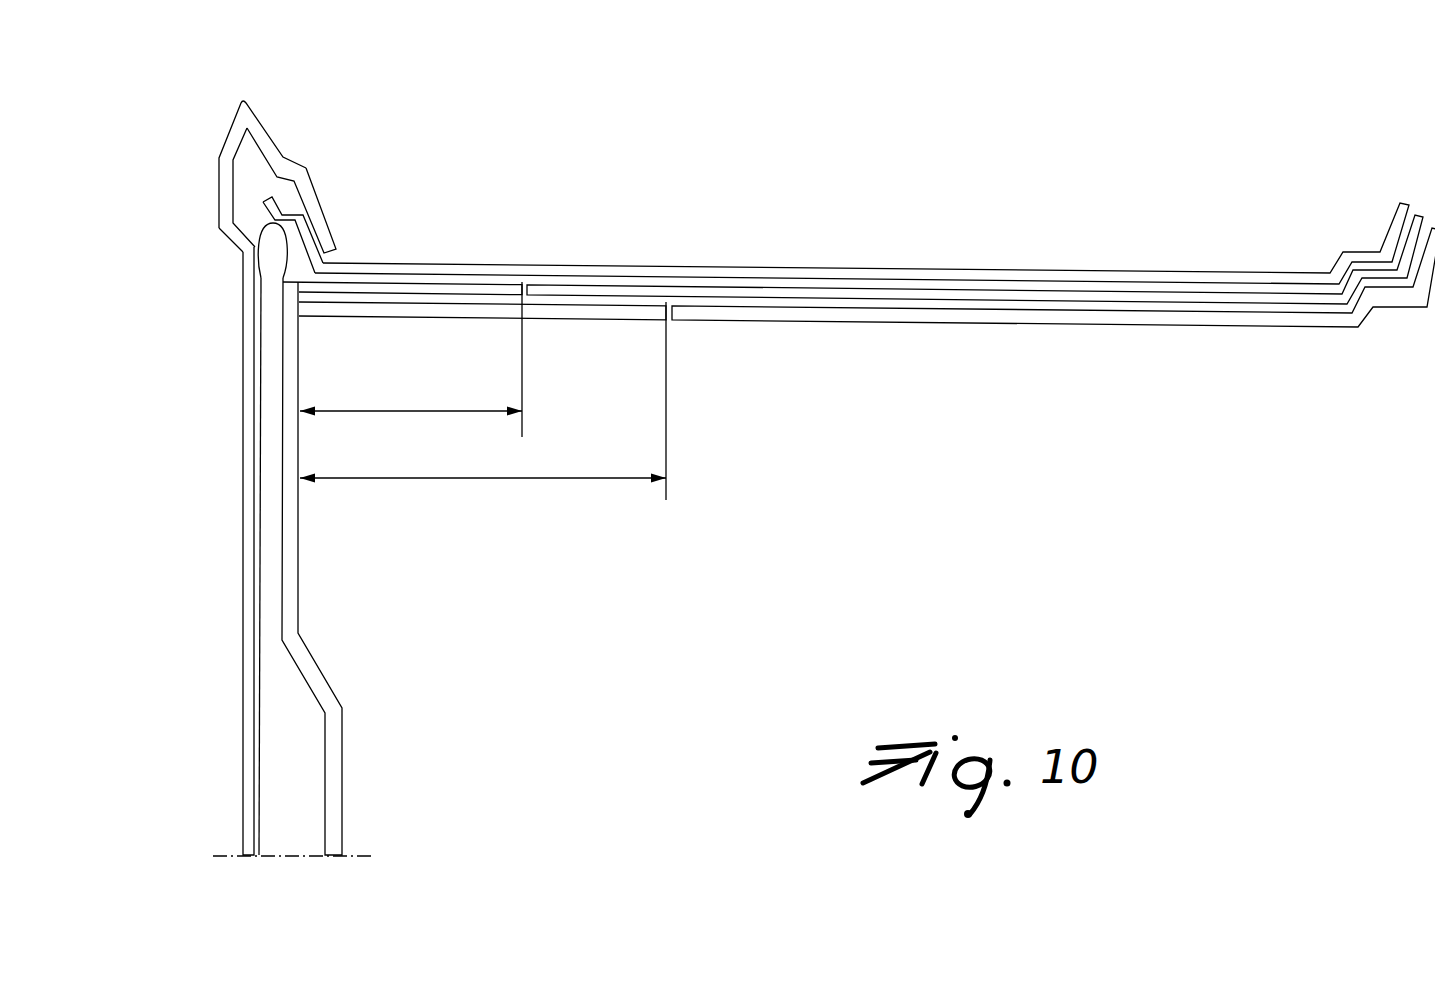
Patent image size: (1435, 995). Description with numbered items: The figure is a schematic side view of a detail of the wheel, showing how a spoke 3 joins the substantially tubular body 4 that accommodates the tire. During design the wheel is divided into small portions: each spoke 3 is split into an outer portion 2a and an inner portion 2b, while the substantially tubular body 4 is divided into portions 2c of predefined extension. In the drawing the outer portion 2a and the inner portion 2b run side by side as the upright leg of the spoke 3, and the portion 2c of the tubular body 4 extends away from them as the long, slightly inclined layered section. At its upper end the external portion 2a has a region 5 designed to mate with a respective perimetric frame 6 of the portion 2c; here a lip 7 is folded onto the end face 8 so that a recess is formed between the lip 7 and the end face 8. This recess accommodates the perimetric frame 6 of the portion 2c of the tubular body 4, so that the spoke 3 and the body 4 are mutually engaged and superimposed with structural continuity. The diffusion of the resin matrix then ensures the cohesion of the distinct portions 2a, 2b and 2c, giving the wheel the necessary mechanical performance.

The front spoke portion 2a is at (243, 550).
The rear spoke portion 2b is at (299, 603).
The tubular body portion 2c is at (735, 268).
The spoke 3 is at (222, 757).
The substantially tubular body 4 is at (833, 254).
The region 5 is at (220, 135).
The perimetric frame 6 is at (303, 215).
The lip 7 is at (272, 158).
The end face 8 is at (243, 252).